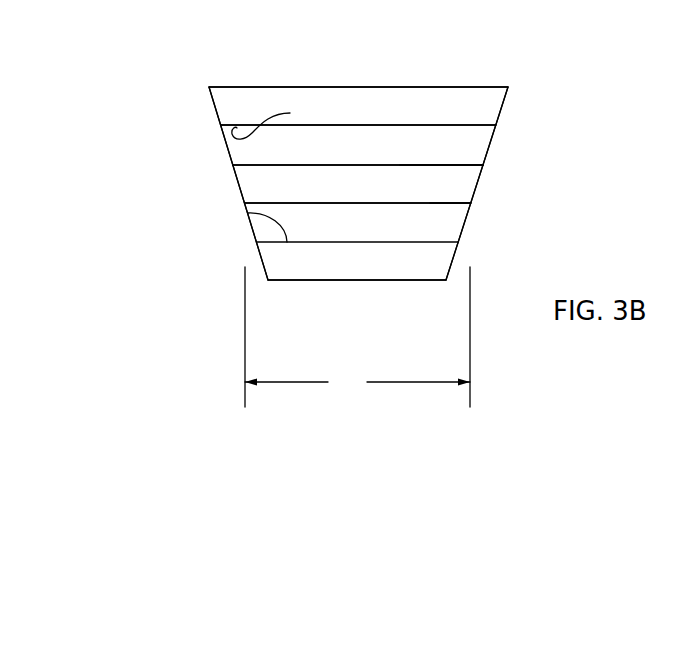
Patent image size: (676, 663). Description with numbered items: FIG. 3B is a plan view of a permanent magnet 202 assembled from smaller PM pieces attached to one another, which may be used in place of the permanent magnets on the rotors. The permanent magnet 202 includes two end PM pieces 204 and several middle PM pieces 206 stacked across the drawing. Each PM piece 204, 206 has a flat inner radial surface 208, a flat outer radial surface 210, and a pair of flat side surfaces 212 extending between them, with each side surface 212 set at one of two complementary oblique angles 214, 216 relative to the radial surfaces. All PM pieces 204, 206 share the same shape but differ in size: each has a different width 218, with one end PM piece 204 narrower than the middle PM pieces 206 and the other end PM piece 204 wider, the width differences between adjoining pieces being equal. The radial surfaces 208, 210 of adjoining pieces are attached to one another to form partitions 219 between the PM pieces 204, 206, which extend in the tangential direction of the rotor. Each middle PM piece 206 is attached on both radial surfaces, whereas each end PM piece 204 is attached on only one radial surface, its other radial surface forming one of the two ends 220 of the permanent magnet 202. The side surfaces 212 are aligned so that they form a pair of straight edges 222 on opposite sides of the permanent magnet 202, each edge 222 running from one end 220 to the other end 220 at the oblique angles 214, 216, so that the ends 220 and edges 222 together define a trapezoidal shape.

The permanent magnet 202 is at (148, 72).
The end PM piece 204 is at (240, 100).
The middle PM piece 206 is at (347, 140).
The inner radial surface 208 is at (455, 205).
The outer radial surface 210 is at (442, 162).
The side surface 212 is at (243, 193).
The oblique angle 214 is at (278, 119).
The oblique angle 216 is at (280, 221).
The width 218 is at (357, 337).
The partition 219 is at (395, 203).
The end 220 is at (363, 87).
The straight edge 222 is at (216, 113).